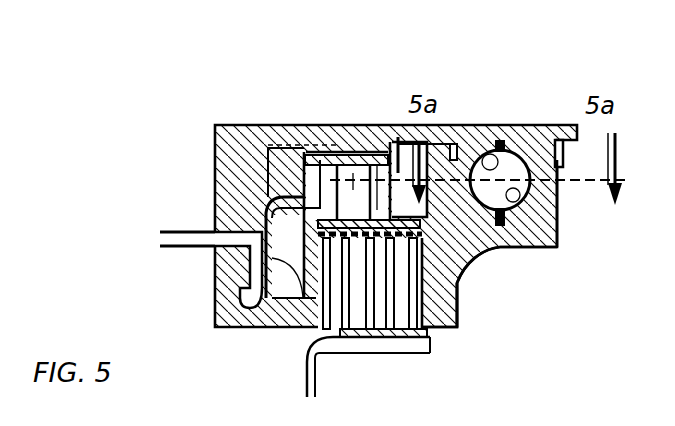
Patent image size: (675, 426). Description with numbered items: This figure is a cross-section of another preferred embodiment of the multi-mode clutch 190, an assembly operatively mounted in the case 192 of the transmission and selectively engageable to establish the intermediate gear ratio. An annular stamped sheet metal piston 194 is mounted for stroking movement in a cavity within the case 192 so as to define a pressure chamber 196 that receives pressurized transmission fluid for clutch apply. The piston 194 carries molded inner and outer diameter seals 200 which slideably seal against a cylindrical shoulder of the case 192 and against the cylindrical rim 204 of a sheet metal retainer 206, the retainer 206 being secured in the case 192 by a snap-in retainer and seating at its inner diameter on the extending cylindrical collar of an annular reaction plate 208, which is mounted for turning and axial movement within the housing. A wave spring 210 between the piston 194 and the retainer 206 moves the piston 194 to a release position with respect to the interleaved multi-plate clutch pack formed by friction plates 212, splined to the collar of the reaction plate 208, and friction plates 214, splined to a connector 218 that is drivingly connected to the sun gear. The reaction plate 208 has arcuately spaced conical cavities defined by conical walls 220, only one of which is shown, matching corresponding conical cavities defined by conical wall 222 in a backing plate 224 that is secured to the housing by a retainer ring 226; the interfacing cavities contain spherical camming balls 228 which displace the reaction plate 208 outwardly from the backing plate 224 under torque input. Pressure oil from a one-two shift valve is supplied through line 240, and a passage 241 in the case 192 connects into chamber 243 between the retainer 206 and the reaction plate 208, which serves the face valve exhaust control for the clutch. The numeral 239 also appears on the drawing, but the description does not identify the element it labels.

The multi-mode clutch 190 is at (266, 100).
The case 192 is at (467, 127).
The annular stamped sheet metal piston 194 is at (297, 320).
The pressure chamber 196 is at (300, 182).
The inner and outer diameter seals 200 is at (243, 320).
The cylindrical rim 204 is at (326, 125).
The sheet metal retainer 206 is at (385, 125).
The annular reaction plate 208 is at (505, 258).
The wave spring 210 is at (349, 127).
The friction plates 212 is at (352, 356).
The friction plates 214 is at (410, 350).
The connector 218 is at (317, 363).
The conical walls 220 is at (502, 127).
The conical wall 222 is at (557, 212).
The backing plate 224 is at (553, 247).
The retainer ring 226 is at (557, 168).
The spherical camming balls 228 is at (500, 143).
The base 239 is at (149, 416).
The line 240 is at (200, 246).
The passage 241 is at (318, 146).
The chamber 243 is at (465, 273).